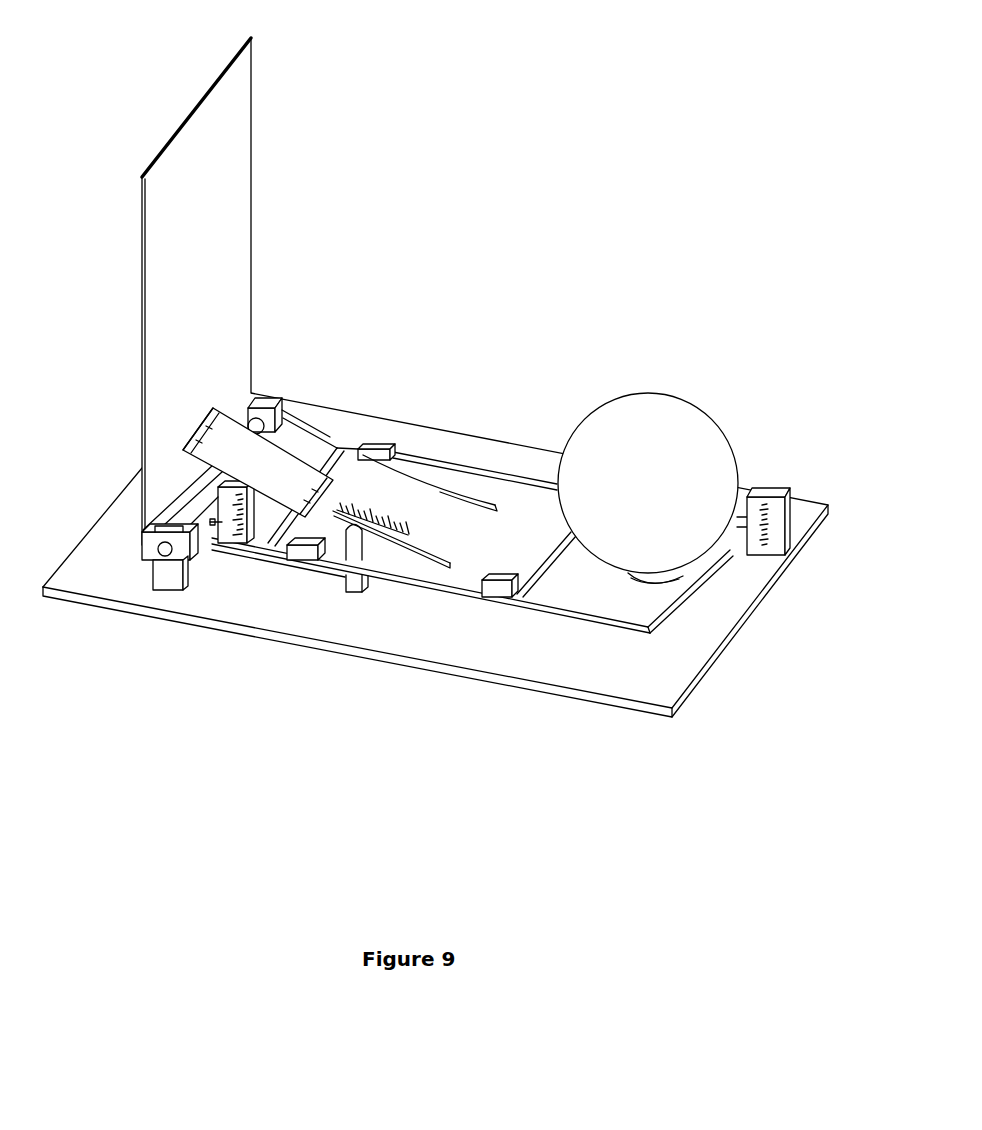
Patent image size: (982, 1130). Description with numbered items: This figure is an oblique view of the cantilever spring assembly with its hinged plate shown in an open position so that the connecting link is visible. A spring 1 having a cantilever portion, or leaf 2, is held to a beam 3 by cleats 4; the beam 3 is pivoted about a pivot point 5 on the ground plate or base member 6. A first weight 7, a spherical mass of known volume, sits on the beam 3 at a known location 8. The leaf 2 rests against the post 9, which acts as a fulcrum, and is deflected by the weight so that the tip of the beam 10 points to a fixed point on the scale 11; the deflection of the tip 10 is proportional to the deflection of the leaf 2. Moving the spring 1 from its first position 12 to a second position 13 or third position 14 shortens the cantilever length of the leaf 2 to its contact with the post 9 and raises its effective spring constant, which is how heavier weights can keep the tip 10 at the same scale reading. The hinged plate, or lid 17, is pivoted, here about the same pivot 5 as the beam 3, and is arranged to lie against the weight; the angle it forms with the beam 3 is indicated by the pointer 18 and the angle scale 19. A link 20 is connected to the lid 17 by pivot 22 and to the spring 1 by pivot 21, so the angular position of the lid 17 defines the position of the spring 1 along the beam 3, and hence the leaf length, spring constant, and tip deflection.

The spring 1 is at (528, 562).
The cantilever portion (leaf) 2 is at (400, 492).
The beam 3 is at (627, 610).
The cleats 4 is at (302, 548).
The pivot point 5 is at (163, 551).
The ground plate (base member) 6 is at (193, 602).
The first weight 7 is at (603, 418).
The known location 8 is at (663, 578).
The post 9 is at (352, 580).
The tip of the beam 10 is at (757, 495).
The scale 11 is at (788, 497).
The position of the spring 12 is at (362, 488).
The second position 13 is at (385, 498).
The third position 14 is at (413, 517).
The hinged plate (lid) 17 is at (223, 177).
The pointer 18 is at (167, 588).
The angle scale 19 is at (241, 546).
The link 20 is at (253, 462).
The pivot 21 is at (315, 487).
The pivot 22 is at (213, 408).